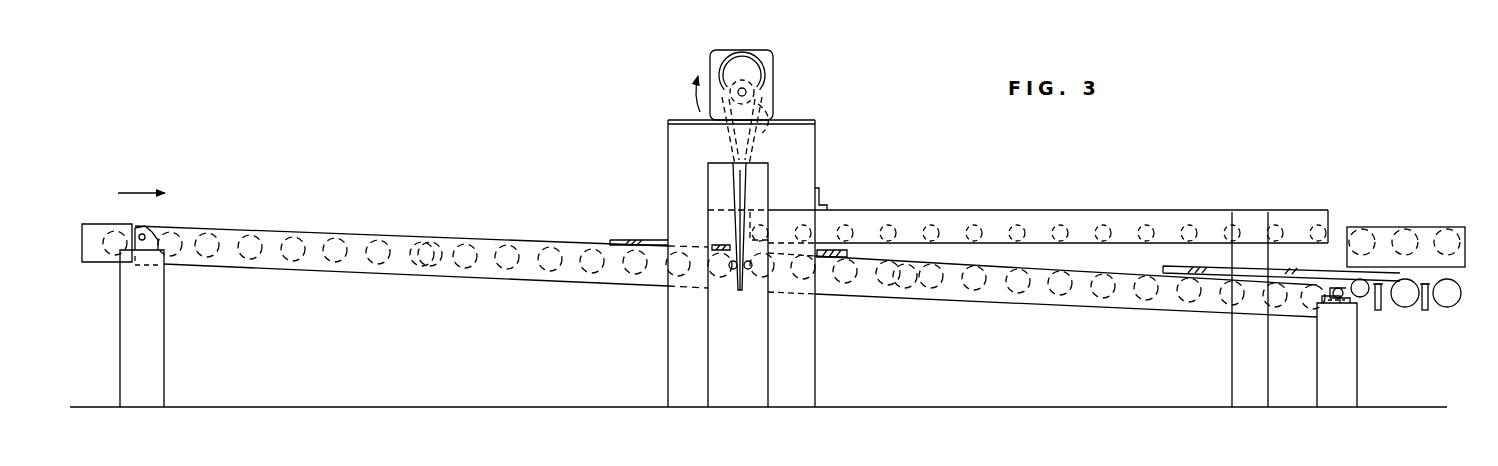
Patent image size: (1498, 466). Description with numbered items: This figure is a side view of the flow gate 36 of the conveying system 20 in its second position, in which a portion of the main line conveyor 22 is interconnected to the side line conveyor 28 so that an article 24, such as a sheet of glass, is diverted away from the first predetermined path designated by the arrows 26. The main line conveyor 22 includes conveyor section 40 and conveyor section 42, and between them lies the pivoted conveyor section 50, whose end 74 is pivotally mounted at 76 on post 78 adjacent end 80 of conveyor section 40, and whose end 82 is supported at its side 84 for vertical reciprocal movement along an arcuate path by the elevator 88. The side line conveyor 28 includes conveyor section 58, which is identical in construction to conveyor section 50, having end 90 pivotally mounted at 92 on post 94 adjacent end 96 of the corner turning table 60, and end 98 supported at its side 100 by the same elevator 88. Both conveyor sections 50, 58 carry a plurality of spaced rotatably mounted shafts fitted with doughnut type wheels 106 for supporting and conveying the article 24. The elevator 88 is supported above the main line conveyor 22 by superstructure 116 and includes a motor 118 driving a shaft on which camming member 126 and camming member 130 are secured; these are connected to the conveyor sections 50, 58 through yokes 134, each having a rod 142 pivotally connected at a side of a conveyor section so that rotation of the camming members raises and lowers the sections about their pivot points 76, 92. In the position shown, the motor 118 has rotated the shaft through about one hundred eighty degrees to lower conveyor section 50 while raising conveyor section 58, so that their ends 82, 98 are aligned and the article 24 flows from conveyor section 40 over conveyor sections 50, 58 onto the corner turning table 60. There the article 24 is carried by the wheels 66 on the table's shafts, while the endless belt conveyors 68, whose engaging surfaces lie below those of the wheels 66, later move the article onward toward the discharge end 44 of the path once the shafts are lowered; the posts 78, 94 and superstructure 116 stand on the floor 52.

The conveying system 20 is at (1063, 152).
The main line conveyor 22 is at (1083, 193).
The article 24 is at (641, 240).
The arrows 26 is at (140, 192).
The side line conveyor 28 is at (1463, 280).
The flow gate 36 is at (552, 208).
The conveyor section 40 is at (102, 211).
The conveyor section 42 is at (925, 208).
The discharge end 44 is at (1405, 212).
The conveyor section 50 is at (370, 222).
The floor 52 is at (1022, 407).
The conveyor section 58 is at (1107, 312).
The corner turning table 60 is at (1428, 348).
The wheels 66 is at (1440, 282).
The endless belt conveyors 68 is at (1380, 312).
The end 74 is at (168, 262).
The pivot 76 is at (143, 240).
The post 78 is at (155, 368).
The end 80 is at (112, 260).
The end 82 is at (720, 292).
The side 84 is at (728, 272).
The elevator 88 is at (782, 68).
The end 90 is at (1323, 299).
The pivot 92 is at (1340, 301).
The post 94 is at (1357, 390).
The end 96 is at (1360, 298).
The end 98 is at (776, 290).
The side 100 is at (748, 283).
The doughnut type wheels 106 is at (434, 265).
The superstructure 116 is at (825, 160).
The motor 118 is at (722, 54).
The camming member 126 is at (745, 64).
The camming member 130 is at (768, 124).
The yoke 134 is at (729, 203).
The rod 142 is at (733, 222).